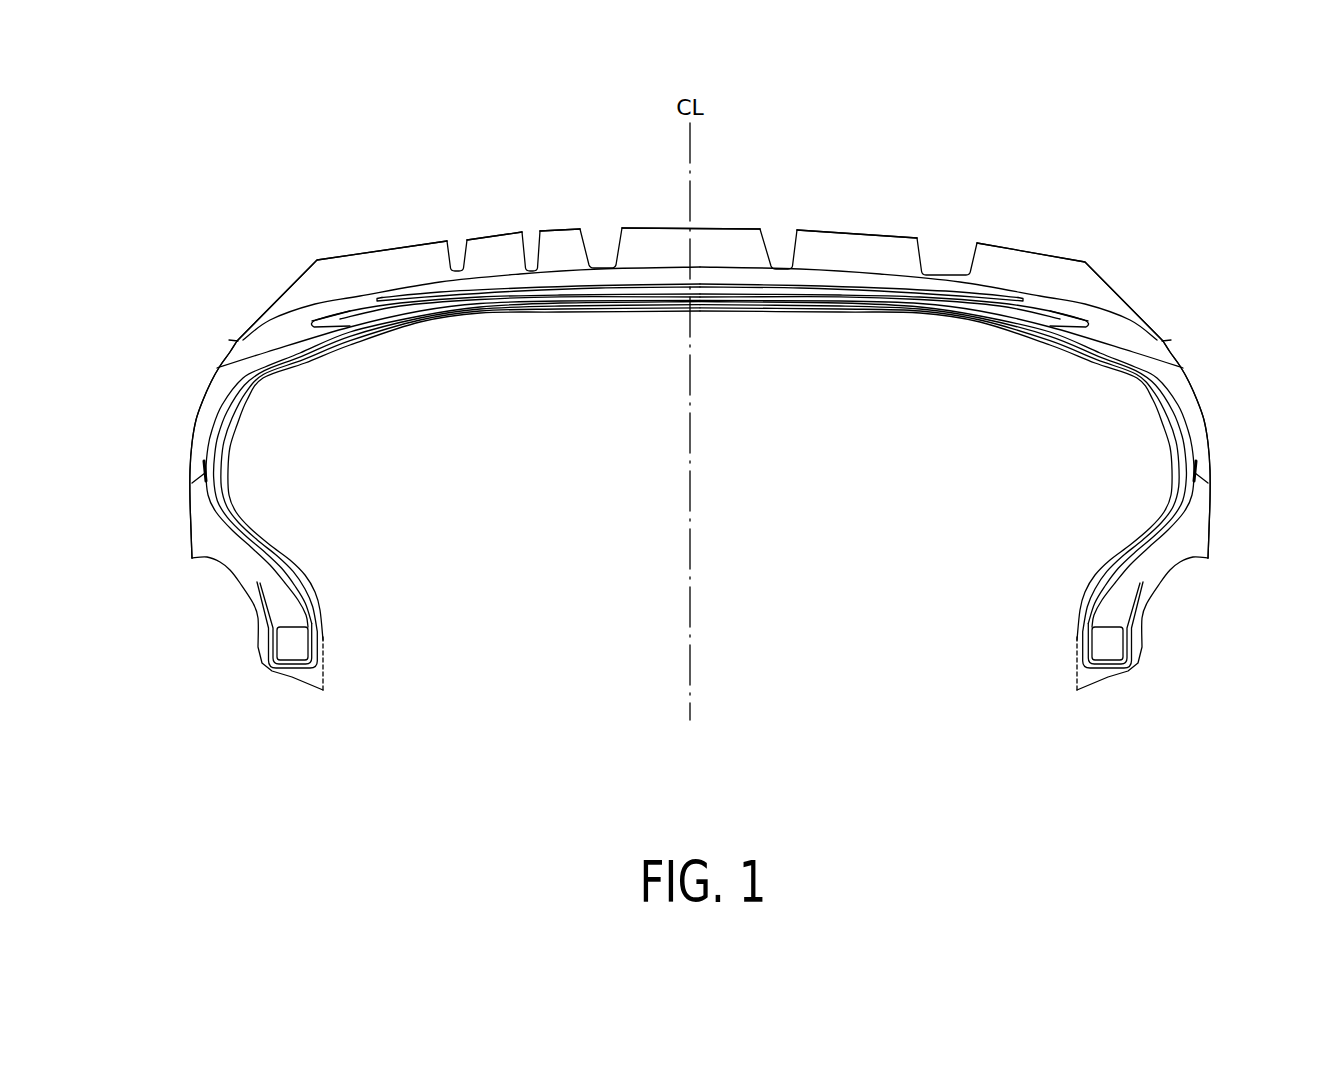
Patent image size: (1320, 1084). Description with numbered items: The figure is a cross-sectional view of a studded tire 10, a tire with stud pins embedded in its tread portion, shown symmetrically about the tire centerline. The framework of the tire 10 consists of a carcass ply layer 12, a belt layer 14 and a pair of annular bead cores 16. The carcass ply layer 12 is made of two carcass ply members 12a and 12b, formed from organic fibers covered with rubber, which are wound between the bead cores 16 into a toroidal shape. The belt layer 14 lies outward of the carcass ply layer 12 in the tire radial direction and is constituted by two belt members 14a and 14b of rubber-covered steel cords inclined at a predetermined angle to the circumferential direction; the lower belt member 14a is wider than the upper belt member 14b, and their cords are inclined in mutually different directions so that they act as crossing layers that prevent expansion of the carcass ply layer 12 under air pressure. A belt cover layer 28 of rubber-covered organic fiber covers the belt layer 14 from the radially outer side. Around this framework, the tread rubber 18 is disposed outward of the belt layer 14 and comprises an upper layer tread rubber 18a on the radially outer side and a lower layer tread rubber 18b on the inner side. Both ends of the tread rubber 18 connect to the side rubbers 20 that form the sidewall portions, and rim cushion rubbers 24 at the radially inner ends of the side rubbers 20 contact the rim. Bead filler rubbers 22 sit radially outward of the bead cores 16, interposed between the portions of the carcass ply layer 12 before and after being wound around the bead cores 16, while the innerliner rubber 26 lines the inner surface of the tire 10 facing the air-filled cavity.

The studded tire 10 is at (1112, 229).
The carcass ply layer 12 is at (1035, 347).
The carcass ply member 12a is at (1153, 400).
The carcass ply member 12b is at (1133, 373).
The belt layer 14 is at (847, 177).
The belt member 14a is at (866, 300).
The belt member 14b is at (907, 300).
The bead core 16 is at (293, 642).
The tread rubber 18 is at (1198, 265).
The upper layer tread rubber 18a is at (1077, 277).
The lower layer tread rubber 18b is at (1077, 308).
The side rubber 20 is at (212, 403).
The bead filler rubber 22 is at (283, 603).
The rim cushion rubber 24 is at (213, 537).
The innerliner rubber 26 is at (330, 660).
The belt cover layer 28 is at (362, 302).